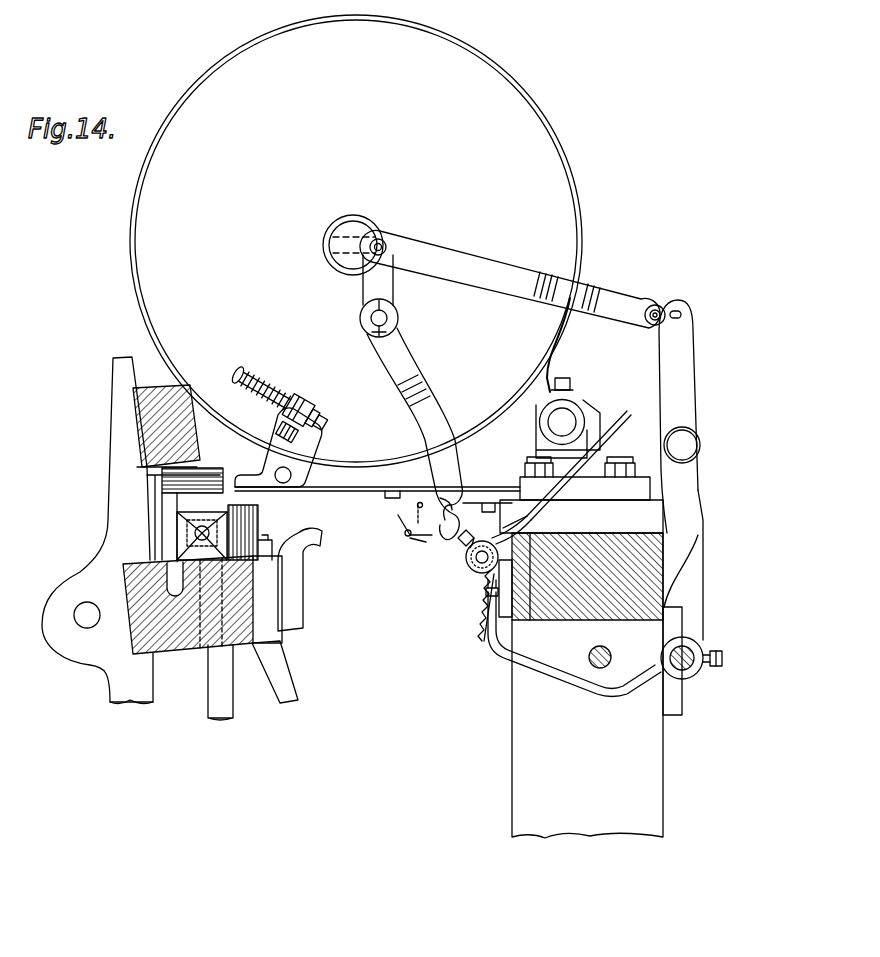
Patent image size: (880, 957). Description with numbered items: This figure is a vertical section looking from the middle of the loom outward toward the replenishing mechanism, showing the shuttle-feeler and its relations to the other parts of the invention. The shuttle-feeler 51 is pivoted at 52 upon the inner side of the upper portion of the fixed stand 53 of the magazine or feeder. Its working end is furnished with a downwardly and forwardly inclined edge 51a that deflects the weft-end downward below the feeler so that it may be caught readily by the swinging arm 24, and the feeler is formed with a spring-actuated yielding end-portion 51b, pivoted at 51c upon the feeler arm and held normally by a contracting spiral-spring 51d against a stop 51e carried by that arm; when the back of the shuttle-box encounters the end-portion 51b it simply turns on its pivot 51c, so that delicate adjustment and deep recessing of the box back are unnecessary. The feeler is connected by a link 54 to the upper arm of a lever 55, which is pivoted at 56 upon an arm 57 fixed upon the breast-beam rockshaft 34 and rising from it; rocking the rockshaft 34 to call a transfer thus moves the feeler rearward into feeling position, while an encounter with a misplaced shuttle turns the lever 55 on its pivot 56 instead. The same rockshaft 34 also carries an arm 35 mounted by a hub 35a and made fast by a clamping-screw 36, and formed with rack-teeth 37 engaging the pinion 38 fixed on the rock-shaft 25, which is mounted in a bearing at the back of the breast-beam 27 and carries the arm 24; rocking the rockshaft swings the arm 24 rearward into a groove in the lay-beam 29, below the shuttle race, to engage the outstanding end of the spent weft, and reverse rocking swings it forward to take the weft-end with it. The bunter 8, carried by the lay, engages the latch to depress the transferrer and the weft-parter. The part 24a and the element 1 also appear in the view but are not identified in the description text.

The tool block 1 is at (180, 527).
The bunter 8 is at (302, 545).
The swinging arm 24 is at (617, 410).
The rod extension 24a is at (503, 532).
The rock-shaft 25 is at (477, 566).
The breast-beam 27 is at (662, 563).
The lay-beam 29 is at (185, 650).
The breast-beam rockshaft 34 is at (692, 672).
The arm 35 is at (602, 690).
The hub 35a is at (700, 640).
The clamping-screw 36 is at (724, 659).
The rack-teeth 37 is at (486, 598).
The pinion 38 is at (466, 557).
The shuttle-feeler 51 is at (440, 403).
The inclined edge 51a is at (397, 520).
The yielding end-portion 51b is at (400, 512).
The pivot 51c is at (406, 540).
The contracting spiral-spring 51d is at (440, 512).
The stop 51e is at (418, 522).
The pivot 52 is at (400, 318).
The fixed stand 53 is at (550, 153).
The link 54 is at (460, 265).
The lever 55 is at (683, 370).
The pivot 56 is at (700, 442).
The arm 57 is at (703, 591).